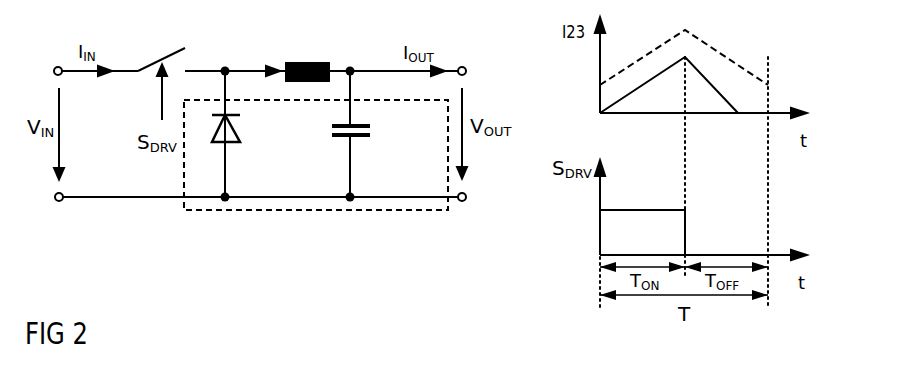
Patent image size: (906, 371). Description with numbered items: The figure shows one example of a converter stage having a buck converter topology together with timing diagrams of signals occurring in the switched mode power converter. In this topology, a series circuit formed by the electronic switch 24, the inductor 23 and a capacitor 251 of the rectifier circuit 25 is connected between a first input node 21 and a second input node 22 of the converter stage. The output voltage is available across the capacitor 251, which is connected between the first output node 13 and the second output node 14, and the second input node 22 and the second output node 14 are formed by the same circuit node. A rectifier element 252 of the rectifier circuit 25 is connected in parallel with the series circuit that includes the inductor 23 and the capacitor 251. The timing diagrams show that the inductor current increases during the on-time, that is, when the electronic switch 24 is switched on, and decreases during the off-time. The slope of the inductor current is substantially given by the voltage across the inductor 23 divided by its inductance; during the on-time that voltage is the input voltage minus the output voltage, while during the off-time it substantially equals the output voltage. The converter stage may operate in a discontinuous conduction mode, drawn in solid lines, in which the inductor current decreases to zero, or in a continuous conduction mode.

The first output node 13 is at (467, 68).
The second output node 14 is at (466, 201).
The first input node 21 is at (55, 69).
The second input node 22 is at (56, 200).
The inductor 23 is at (305, 62).
The electronic switch 24 is at (165, 55).
The rectifier circuit 25 is at (302, 212).
The capacitor 251 is at (382, 128).
The rectifier element 252 is at (243, 133).